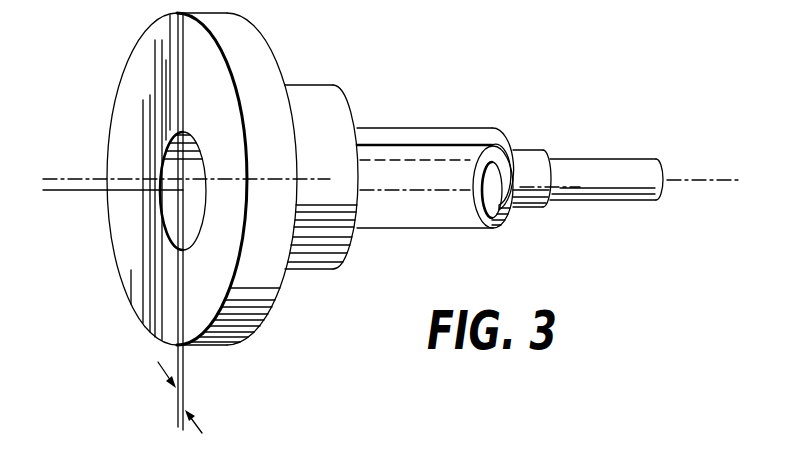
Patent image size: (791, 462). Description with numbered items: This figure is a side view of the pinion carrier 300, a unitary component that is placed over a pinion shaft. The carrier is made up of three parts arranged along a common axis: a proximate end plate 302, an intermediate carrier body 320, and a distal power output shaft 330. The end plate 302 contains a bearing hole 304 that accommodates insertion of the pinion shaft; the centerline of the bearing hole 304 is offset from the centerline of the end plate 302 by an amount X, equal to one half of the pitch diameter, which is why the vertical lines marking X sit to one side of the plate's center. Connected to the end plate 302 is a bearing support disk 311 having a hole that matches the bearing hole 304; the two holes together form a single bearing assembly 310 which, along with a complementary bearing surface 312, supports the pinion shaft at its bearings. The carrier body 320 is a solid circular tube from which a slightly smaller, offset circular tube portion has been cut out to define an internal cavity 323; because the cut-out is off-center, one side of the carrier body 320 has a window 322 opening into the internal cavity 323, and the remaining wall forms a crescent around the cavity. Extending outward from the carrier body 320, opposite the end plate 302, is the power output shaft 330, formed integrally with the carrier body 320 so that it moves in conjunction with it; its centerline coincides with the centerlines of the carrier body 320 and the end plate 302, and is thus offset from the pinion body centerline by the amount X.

The pinion carrier 300 is at (502, 44).
The end plate 302 is at (130, 122).
The bearing hole 304 is at (186, 147).
The bearing assembly 310 is at (272, 47).
The bearing support disk 311 is at (348, 113).
The complementary bearing surface 312 is at (493, 200).
The intermediate carrier body 320 is at (460, 127).
The window 322 is at (408, 145).
The internal cavity 323 is at (440, 212).
The power output shaft 330 is at (587, 172).